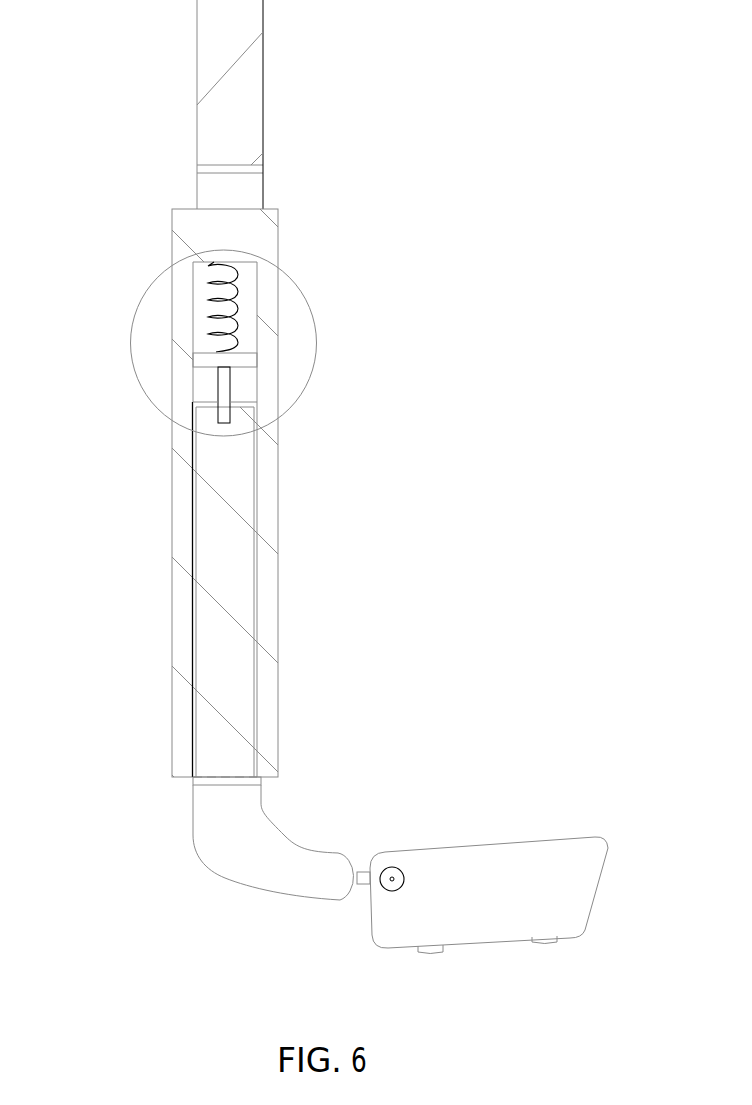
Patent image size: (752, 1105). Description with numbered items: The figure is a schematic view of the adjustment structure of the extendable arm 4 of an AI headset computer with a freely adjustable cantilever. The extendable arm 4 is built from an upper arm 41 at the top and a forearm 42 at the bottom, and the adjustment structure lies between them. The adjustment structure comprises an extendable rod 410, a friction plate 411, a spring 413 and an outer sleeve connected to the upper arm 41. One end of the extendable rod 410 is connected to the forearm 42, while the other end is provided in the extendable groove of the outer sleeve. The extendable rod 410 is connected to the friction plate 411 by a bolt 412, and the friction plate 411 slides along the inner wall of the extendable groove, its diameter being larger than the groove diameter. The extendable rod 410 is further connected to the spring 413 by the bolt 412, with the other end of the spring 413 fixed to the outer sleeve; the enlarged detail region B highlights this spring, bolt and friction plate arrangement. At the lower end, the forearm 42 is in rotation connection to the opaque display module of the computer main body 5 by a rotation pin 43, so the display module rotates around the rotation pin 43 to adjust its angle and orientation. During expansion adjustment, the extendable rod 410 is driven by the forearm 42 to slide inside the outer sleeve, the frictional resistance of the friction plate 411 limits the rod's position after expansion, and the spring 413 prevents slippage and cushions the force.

The extendable arm 4 is at (172, 528).
The upper arm 41 is at (240, 112).
The extendable rod 410 is at (225, 613).
The friction plate 411 is at (245, 385).
The bolt 412 is at (248, 357).
The spring 413 is at (235, 297).
The forearm 42 is at (245, 865).
The rotation pin 43 is at (400, 873).
The computer main body 5 is at (477, 912).
The detail region B is at (132, 328).